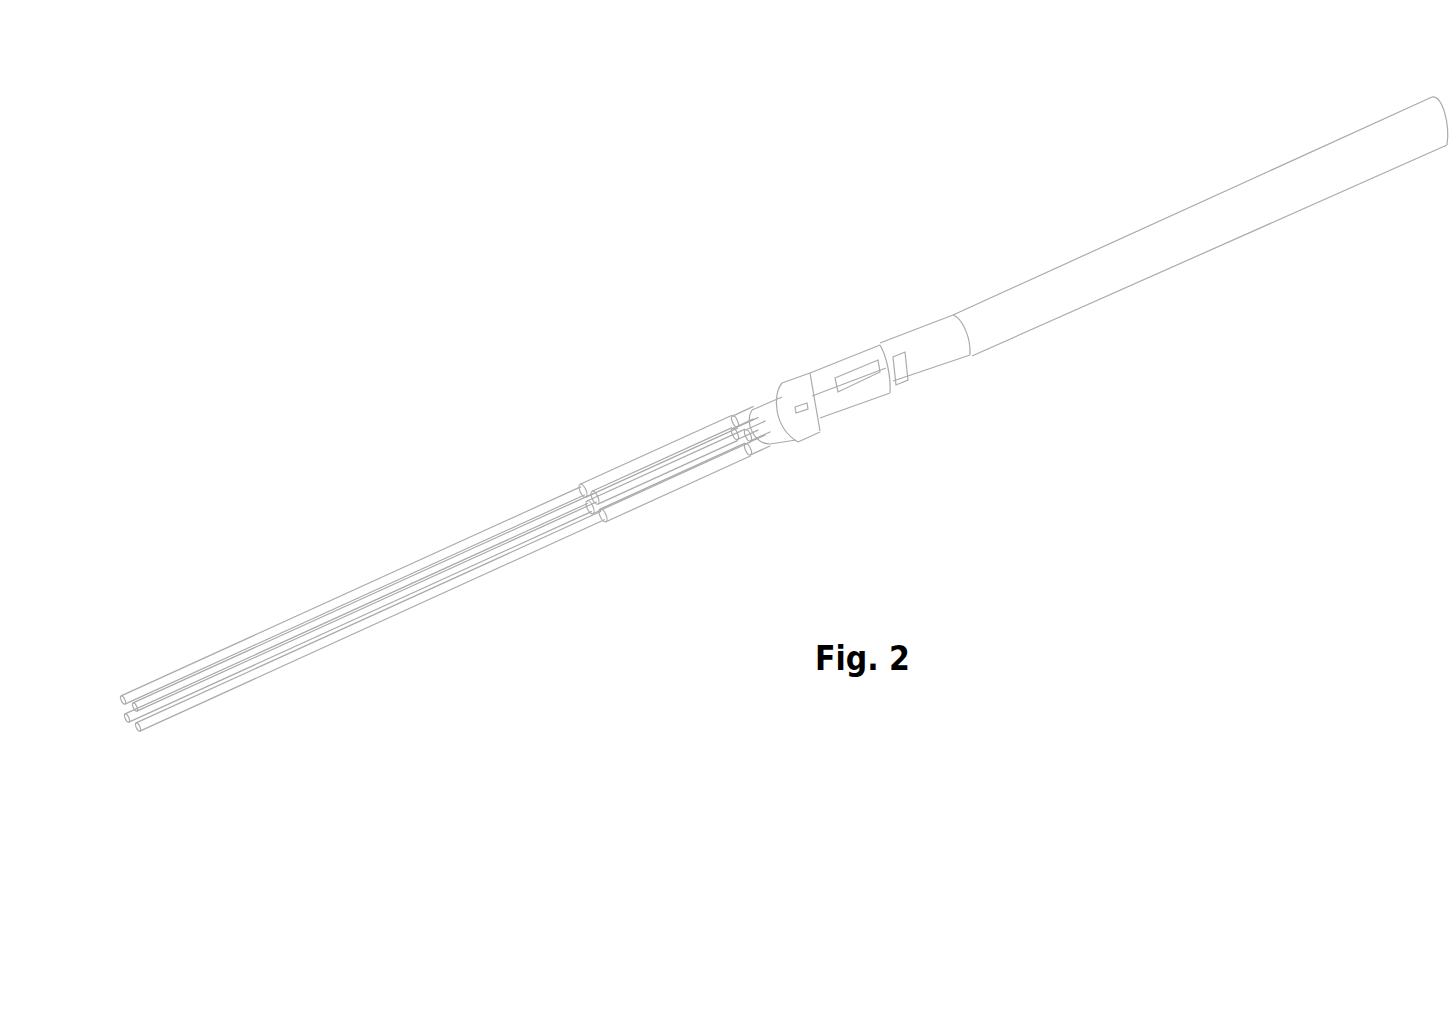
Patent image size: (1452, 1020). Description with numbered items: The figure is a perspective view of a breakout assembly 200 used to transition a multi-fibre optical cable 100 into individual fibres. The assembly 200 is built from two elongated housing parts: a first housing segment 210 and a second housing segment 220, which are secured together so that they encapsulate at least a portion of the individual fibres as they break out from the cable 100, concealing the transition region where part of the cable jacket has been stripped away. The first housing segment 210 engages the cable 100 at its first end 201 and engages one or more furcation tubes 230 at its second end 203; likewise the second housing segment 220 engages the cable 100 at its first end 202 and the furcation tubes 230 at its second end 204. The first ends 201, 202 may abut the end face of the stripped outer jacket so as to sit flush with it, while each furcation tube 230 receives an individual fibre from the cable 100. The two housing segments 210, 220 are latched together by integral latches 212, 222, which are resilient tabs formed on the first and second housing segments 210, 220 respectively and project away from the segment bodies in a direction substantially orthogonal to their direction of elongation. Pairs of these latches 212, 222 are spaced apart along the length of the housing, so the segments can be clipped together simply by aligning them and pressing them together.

The multi-fibre optical cable 100 is at (1182, 233).
The breakout assembly 200 is at (734, 377).
The first end of the first housing segment 201 is at (968, 355).
The first end of the second housing segment 202 is at (965, 325).
The second end of the first housing segment 203 is at (770, 452).
The second end of the second housing segment 204 is at (745, 417).
The first housing segment 210 is at (947, 373).
The latch 212 is at (908, 377).
The second housing segment 220 is at (900, 333).
The latch 222 is at (810, 432).
The furcation tube 230 is at (328, 603).